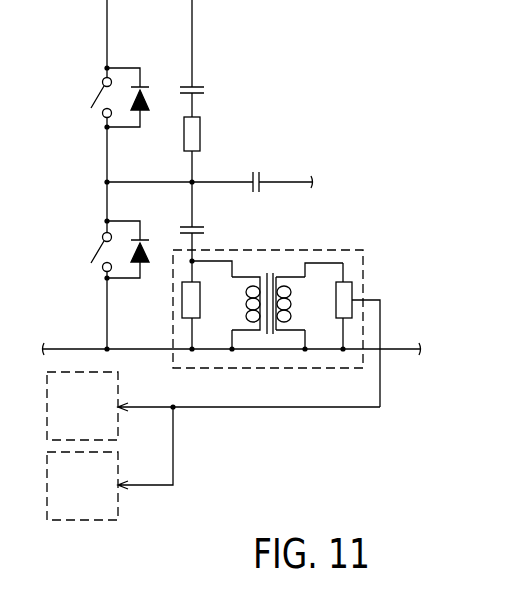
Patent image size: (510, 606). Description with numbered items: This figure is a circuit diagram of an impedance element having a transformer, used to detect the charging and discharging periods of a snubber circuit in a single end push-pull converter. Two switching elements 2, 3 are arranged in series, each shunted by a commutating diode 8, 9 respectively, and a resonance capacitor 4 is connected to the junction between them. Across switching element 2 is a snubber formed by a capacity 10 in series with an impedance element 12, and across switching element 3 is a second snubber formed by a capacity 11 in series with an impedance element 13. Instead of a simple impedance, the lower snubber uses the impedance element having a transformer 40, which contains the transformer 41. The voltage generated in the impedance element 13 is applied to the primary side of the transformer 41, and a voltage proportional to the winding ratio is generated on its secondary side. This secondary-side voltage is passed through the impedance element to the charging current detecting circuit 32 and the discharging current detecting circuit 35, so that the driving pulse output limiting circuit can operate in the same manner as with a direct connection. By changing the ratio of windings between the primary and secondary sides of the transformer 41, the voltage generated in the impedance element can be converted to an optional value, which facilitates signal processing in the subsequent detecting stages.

The switching element 2 is at (92, 100).
The switching element 3 is at (92, 256).
The resonance capacitor 4 is at (262, 176).
The commutating diode 8 is at (141, 112).
The commutating diode 9 is at (142, 266).
The capacity 10 is at (204, 82).
The capacity 11 is at (204, 223).
The impedance element 12 is at (200, 133).
The impedance element 13 is at (200, 288).
The charging current detecting circuit 32 is at (213, 406).
The discharging current detecting circuit 35 is at (110, 463).
The impedance element having a transformer 40 is at (363, 277).
The transformer 41 is at (273, 278).